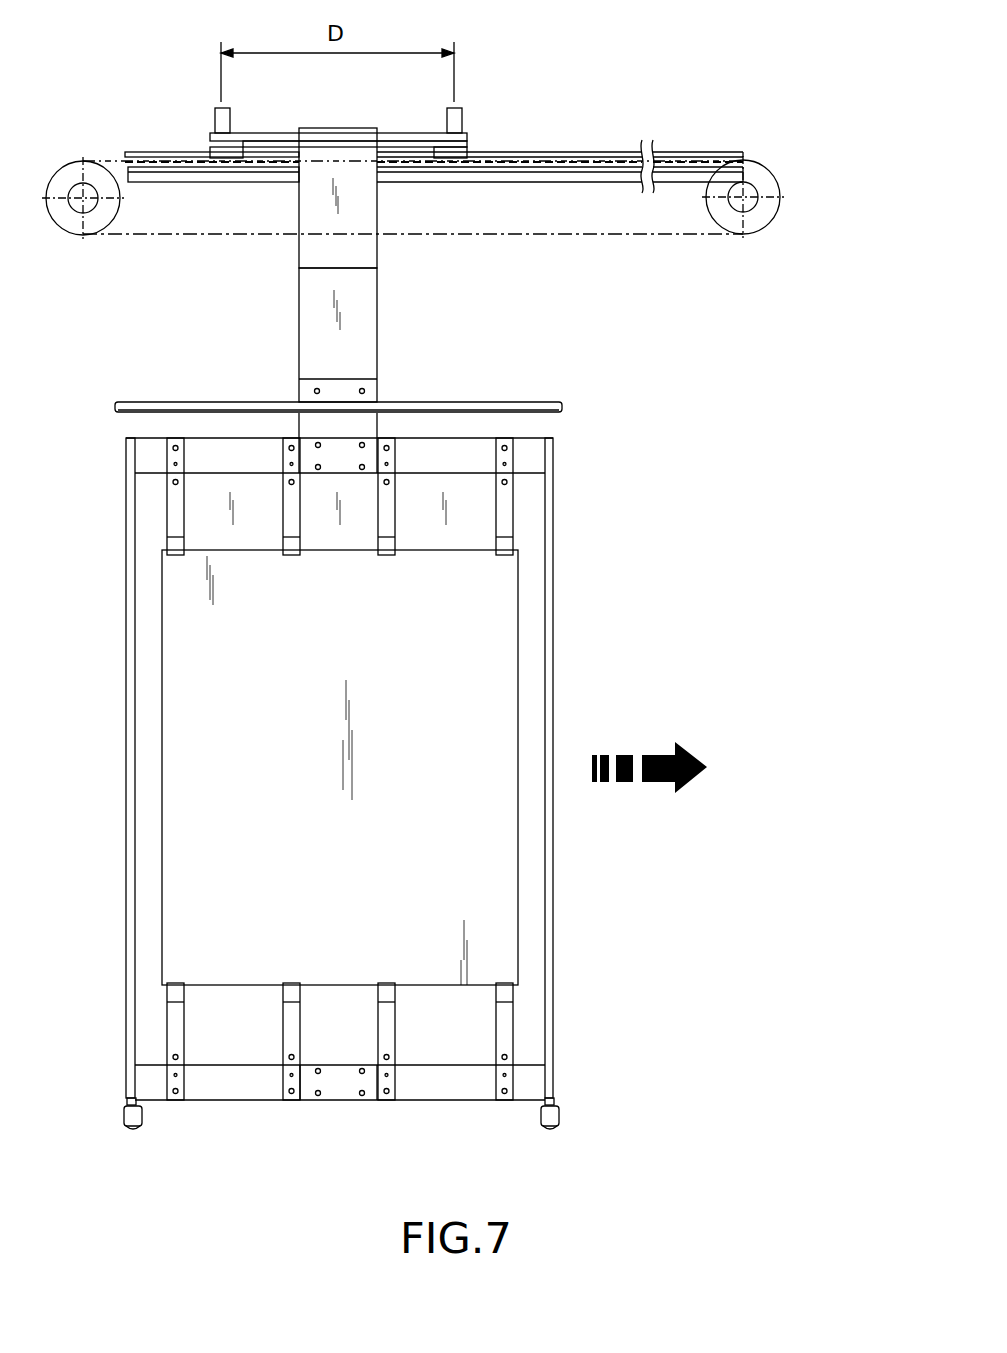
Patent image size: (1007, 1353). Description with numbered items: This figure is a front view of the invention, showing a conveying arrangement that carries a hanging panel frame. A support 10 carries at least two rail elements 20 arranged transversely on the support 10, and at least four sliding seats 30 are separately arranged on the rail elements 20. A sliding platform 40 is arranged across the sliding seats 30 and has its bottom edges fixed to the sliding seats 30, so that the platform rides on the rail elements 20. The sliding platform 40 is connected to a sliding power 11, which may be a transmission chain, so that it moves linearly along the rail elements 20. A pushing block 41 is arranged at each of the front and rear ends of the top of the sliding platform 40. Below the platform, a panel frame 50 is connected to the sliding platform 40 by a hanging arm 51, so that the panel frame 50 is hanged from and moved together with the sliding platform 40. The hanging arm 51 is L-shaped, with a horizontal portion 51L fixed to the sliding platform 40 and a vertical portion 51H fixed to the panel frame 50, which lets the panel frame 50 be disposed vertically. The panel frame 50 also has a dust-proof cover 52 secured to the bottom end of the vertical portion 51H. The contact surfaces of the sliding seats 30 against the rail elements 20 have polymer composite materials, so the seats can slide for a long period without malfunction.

The support 10 is at (620, 174).
The sliding power 11 is at (133, 236).
The rail element 20 is at (597, 151).
The sliding seat 30 is at (222, 153).
The sliding platform 40 is at (264, 140).
The pushing block 41 is at (218, 121).
The panel frame 50 is at (572, 630).
The hanging arm 51 is at (420, 294).
The horizontal portion 51L is at (338, 126).
The vertical portion 51H is at (363, 338).
The dust-proof cover 52 is at (548, 402).